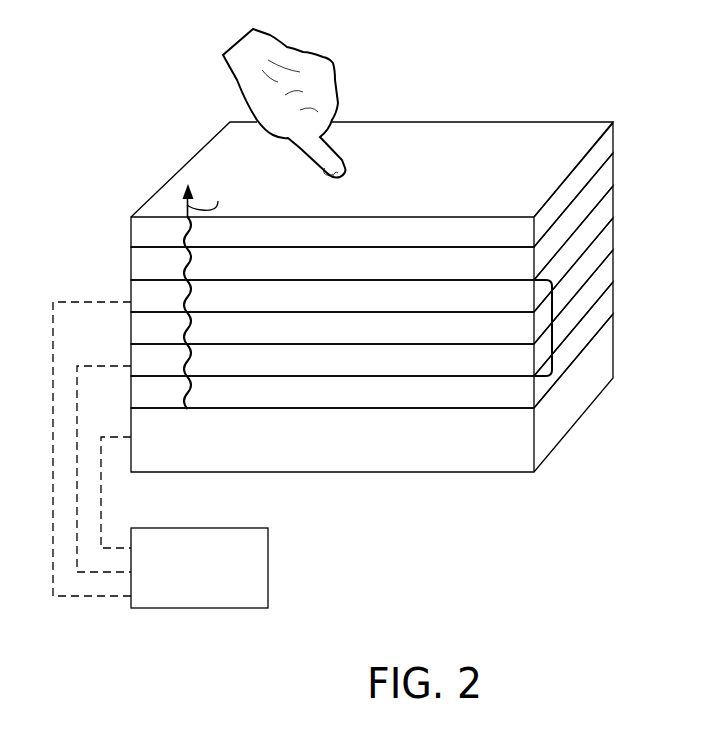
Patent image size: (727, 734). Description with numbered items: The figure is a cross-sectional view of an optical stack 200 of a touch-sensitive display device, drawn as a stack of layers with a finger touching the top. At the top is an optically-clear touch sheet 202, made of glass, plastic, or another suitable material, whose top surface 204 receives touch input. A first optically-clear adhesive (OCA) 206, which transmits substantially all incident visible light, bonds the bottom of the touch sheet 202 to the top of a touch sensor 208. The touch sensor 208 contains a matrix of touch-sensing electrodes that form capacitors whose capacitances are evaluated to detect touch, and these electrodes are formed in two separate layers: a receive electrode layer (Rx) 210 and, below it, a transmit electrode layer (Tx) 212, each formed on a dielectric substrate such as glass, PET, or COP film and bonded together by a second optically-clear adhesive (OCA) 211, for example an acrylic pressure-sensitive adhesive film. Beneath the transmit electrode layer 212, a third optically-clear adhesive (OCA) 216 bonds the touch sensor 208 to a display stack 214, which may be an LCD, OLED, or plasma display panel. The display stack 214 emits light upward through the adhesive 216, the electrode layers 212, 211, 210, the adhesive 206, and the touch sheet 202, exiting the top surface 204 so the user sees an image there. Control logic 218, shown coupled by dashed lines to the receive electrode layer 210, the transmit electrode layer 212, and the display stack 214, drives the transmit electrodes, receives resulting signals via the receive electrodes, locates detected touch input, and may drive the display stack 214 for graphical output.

The optical stack 200 is at (442, 71).
The touch sheet 202 is at (413, 242).
The top surface 204 is at (502, 194).
The optically-clear adhesive (OCA) 206 is at (368, 275).
The touch sensor 208 is at (553, 325).
The receive electrode layer (Rx) 210 is at (362, 307).
The second optically-clear adhesive (OCA) 211 is at (367, 339).
The transmit electrode layer (Tx) 212 is at (360, 371).
The display stack 214 is at (417, 451).
The third optically-clear adhesive (OCA) 216 is at (368, 403).
The control logic 218 is at (214, 603).